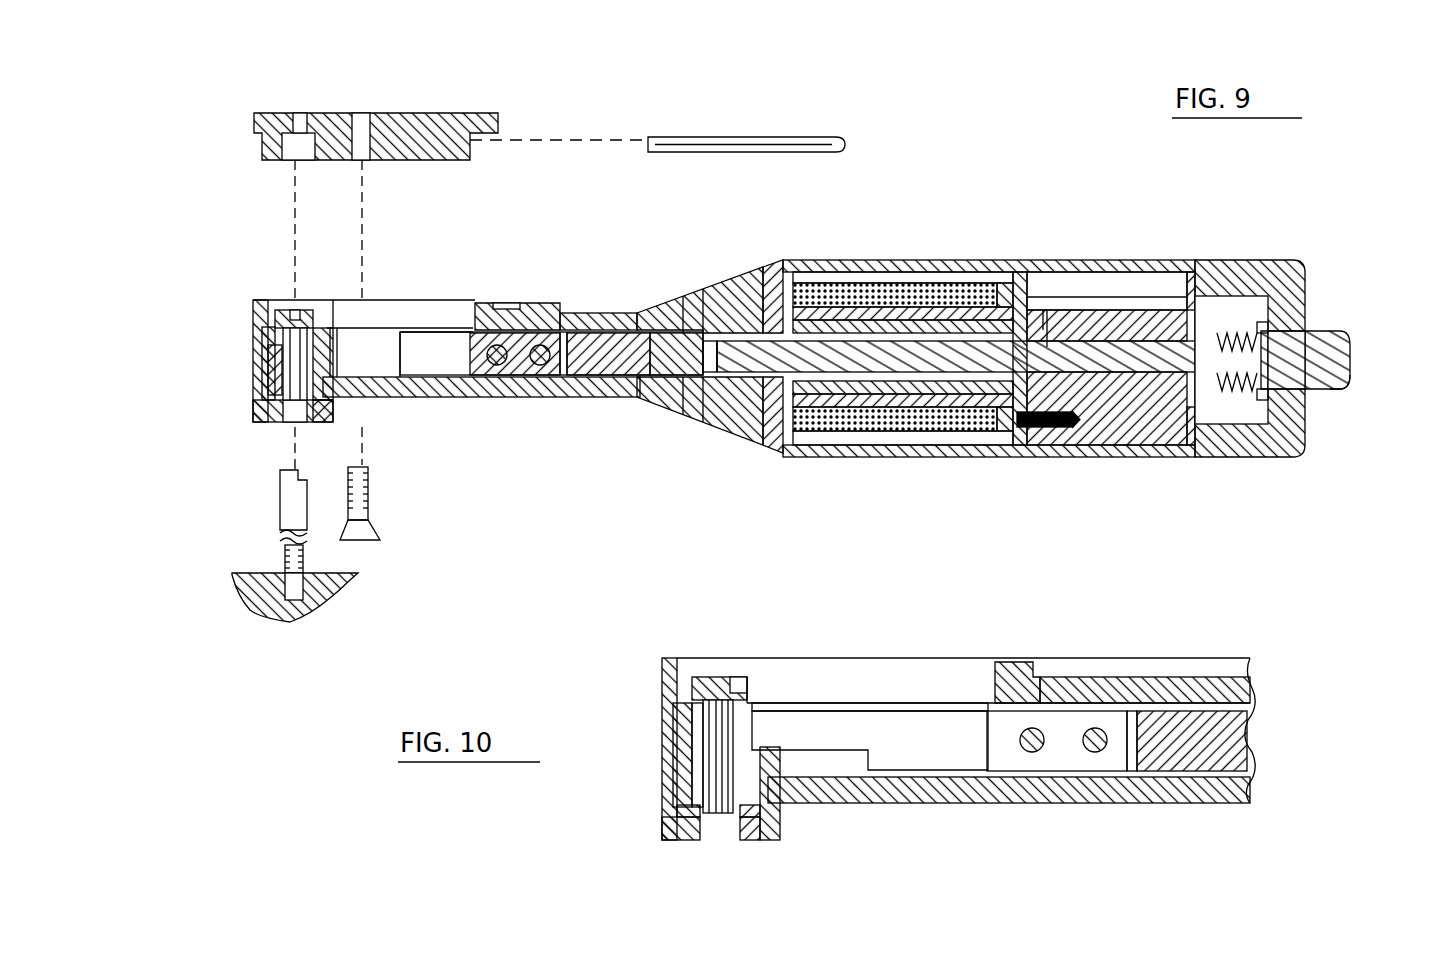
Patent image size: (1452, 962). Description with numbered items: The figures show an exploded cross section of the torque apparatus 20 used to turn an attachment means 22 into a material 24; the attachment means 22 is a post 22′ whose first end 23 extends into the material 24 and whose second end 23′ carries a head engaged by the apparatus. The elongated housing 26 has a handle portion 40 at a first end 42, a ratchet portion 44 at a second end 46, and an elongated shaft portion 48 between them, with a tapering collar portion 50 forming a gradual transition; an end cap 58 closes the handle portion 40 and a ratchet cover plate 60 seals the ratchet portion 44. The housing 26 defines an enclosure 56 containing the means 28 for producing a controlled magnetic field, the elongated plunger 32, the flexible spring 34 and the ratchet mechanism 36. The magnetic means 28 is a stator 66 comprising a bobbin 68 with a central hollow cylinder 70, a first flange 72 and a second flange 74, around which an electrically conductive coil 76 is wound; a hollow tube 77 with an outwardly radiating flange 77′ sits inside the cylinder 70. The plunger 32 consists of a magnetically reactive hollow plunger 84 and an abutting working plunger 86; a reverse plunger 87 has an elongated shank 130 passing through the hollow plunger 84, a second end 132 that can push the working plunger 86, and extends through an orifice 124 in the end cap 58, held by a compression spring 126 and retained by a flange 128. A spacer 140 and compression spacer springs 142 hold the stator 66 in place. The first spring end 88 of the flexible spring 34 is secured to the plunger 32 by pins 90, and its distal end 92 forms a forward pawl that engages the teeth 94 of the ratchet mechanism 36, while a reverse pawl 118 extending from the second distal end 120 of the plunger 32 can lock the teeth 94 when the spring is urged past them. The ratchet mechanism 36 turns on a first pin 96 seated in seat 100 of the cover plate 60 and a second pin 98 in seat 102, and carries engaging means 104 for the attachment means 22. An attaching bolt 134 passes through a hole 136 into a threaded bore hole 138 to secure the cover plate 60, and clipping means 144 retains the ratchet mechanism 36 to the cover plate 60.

In FIG. 9, the torque apparatus 20 is at (1005, 115).
In FIG. 10, the torque apparatus 20 is at (1160, 612).
In FIG. 9, the attachment means 22 is at (273, 510).
In FIG. 9, the post 22′ is at (277, 524).
In FIG. 9, the first end 23 is at (325, 565).
In FIG. 9, the second end 23′ is at (283, 482).
In FIG. 9, the material 24 is at (260, 603).
In FIG. 9, the elongated housing 26 is at (717, 442).
In FIG. 10, the elongated housing 26 is at (1145, 805).
In FIG. 9, the means for producing a controlled magnetic field 28 is at (897, 283).
In FIG. 9, the elongated plunger 32 is at (698, 328).
In FIG. 10, the elongated plunger 32 is at (1200, 780).
In FIG. 9, the elongated flexible spring 34 is at (520, 368).
In FIG. 10, the elongated flexible spring 34 is at (935, 760).
In FIG. 9, the ratchet mechanism 36 is at (262, 348).
In FIG. 10, the ratchet mechanism 36 is at (700, 773).
In FIG. 9, the handle portion 40 is at (1057, 262).
In FIG. 9, the first end 42 is at (1214, 266).
In FIG. 9, the ratchet portion 44 is at (413, 398).
In FIG. 10, the ratchet portion 44 is at (923, 800).
In FIG. 9, the second end 46 is at (253, 302).
In FIG. 10, the second end 46 is at (662, 672).
In FIG. 9, the elongated shaft portion 48 is at (566, 308).
In FIG. 10, the elongated shaft portion 48 is at (1110, 683).
In FIG. 9, the tapering collar portion 50 is at (740, 305).
In FIG. 10, the tapering collar portion 50 is at (1250, 668).
In FIG. 9, the enclosure 56 is at (445, 358).
In FIG. 10, the enclosure 56 is at (847, 772).
In FIG. 9, the end cap 58 is at (1300, 265).
In FIG. 9, the ratchet cover plate 60 is at (418, 112).
In FIG. 9, the stator 66 is at (883, 290).
In FIG. 9, the bobbin 68 is at (925, 300).
In FIG. 9, the central hollow cylinder 70 is at (912, 322).
In FIG. 9, the first flange 72 is at (1005, 300).
In FIG. 9, the second flange 74 is at (790, 262).
In FIG. 9, the electrically conductive coil 76 is at (827, 283).
In FIG. 9, the hollow tube 77 is at (763, 327).
In FIG. 9, the outwardly radiating flange 77′ is at (1022, 300).
In FIG. 9, the magnetically reactive hollow plunger 84 is at (717, 333).
In FIG. 9, the working plunger 86 is at (660, 350).
In FIG. 10, the working plunger 86 is at (1250, 745).
In FIG. 9, the reverse plunger 87 is at (1350, 392).
In FIG. 9, the first spring end 88 is at (540, 367).
In FIG. 10, the first spring end 88 is at (1065, 722).
In FIG. 9, the pins 90 is at (497, 345).
In FIG. 10, the pins 90 is at (1033, 753).
In FIG. 10, the distal end 92 is at (765, 716).
In FIG. 9, the teeth 94 is at (262, 380).
In FIG. 10, the teeth 94 is at (692, 733).
In FIG. 9, the first pin 96 is at (265, 320).
In FIG. 10, the first pin 96 is at (690, 690).
In FIG. 9, the second pin 98 is at (258, 416).
In FIG. 10, the second pin 98 is at (662, 835).
In FIG. 9, the seat 100 is at (292, 162).
In FIG. 10, the seat 100 is at (735, 692).
In FIG. 9, the seat 102 is at (277, 423).
In FIG. 10, the seat 102 is at (762, 840).
In FIG. 9, the engaging means 104 is at (302, 312).
In FIG. 10, the engaging means 104 is at (733, 677).
In FIG. 9, the reverse pawl 118 is at (372, 340).
In FIG. 10, the reverse pawl 118 is at (812, 703).
In FIG. 9, the second distal end 120 is at (385, 336).
In FIG. 10, the second distal end 120 is at (807, 700).
In FIG. 9, the orifice 124 is at (1330, 333).
In FIG. 9, the compression spring 126 is at (1254, 390).
In FIG. 9, the flange 128 is at (1265, 330).
In FIG. 9, the elongated shank 130 is at (1159, 322).
In FIG. 9, the second end 132 is at (665, 375).
In FIG. 9, the attaching bolt 134 is at (365, 513).
In FIG. 9, the hole 136 is at (367, 388).
In FIG. 10, the hole 136 is at (830, 790).
In FIG. 9, the threaded bore hole 138 is at (366, 160).
In FIG. 9, the spacer 140 is at (1188, 310).
In FIG. 9, the compression spacer springs 142 is at (1048, 428).
In FIG. 9, the clipping means 144 is at (690, 137).